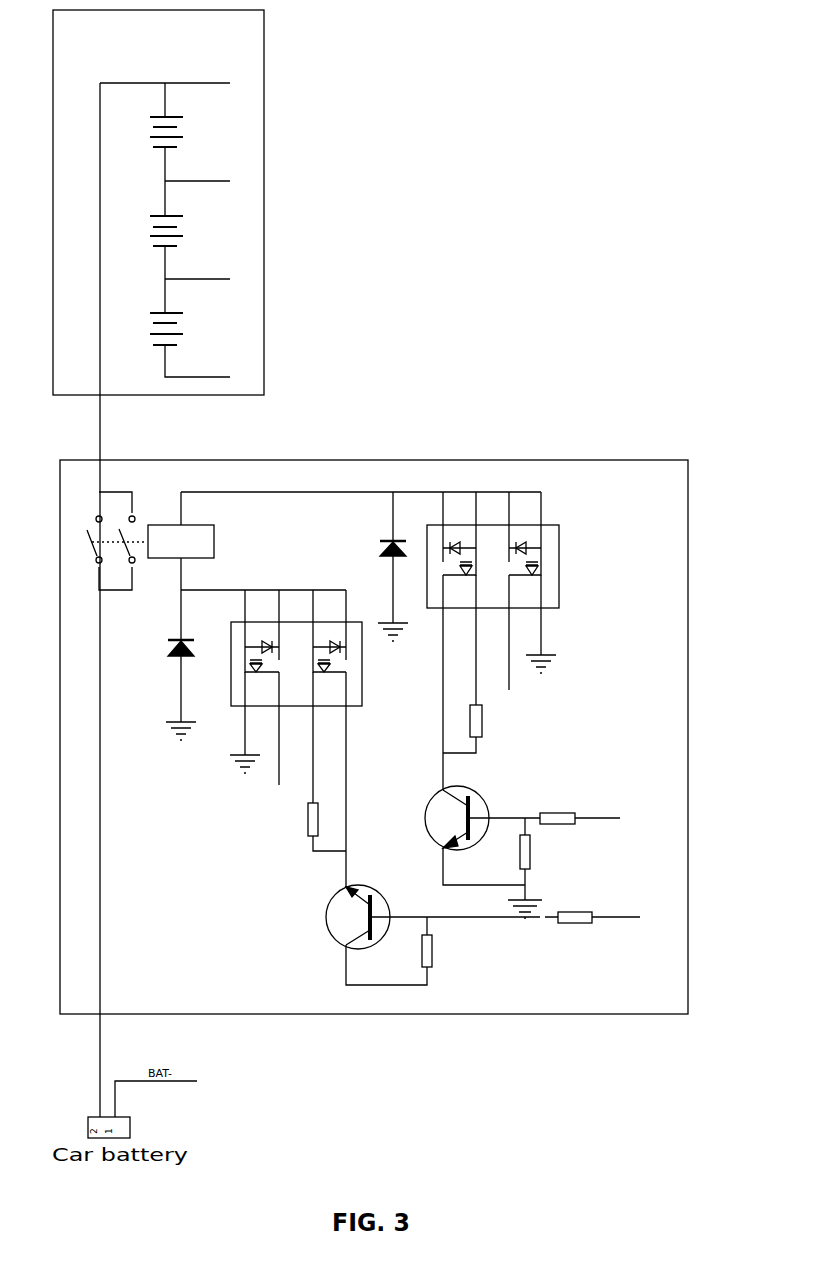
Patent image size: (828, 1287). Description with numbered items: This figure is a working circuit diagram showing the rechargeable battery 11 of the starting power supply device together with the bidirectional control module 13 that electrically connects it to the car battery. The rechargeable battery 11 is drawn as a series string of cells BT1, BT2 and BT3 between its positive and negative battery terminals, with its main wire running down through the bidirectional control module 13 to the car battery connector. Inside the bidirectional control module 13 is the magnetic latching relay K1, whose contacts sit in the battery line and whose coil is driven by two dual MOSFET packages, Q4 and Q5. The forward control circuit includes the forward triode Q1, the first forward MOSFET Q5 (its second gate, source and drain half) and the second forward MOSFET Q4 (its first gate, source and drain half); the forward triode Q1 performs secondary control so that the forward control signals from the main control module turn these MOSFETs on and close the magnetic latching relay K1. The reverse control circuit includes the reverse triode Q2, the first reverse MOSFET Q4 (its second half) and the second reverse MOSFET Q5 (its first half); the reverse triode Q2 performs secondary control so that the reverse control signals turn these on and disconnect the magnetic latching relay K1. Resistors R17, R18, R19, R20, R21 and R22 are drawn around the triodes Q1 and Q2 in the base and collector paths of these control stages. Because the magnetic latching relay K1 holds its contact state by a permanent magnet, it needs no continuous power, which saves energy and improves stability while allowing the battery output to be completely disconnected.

The rechargeable battery 11 is at (211, 202).
The bidirectional control module 13 is at (374, 703).
The magnetic latching relay K1 is at (150, 525).
The second forward MOSFET / first reverse MOSFET Q4 is at (305, 666).
The first forward MOSFET / second reverse MOSFET Q5 is at (499, 568).
The forward triode Q1 is at (466, 819).
The reverse triode Q2 is at (336, 917).
The resistor R17 is at (556, 803).
The resistor R18 is at (536, 852).
The resistor R19 is at (487, 721).
The resistor R20 is at (438, 951).
The resistor R21 is at (572, 910).
The resistor R22 is at (295, 819).
The battery cell BT1 is at (174, 132).
The battery cell BT2 is at (174, 231).
The battery cell BT3 is at (174, 329).